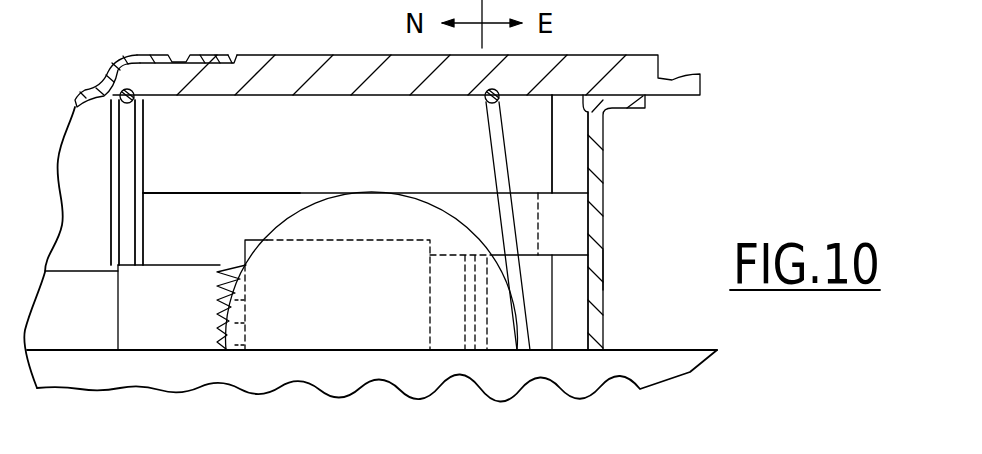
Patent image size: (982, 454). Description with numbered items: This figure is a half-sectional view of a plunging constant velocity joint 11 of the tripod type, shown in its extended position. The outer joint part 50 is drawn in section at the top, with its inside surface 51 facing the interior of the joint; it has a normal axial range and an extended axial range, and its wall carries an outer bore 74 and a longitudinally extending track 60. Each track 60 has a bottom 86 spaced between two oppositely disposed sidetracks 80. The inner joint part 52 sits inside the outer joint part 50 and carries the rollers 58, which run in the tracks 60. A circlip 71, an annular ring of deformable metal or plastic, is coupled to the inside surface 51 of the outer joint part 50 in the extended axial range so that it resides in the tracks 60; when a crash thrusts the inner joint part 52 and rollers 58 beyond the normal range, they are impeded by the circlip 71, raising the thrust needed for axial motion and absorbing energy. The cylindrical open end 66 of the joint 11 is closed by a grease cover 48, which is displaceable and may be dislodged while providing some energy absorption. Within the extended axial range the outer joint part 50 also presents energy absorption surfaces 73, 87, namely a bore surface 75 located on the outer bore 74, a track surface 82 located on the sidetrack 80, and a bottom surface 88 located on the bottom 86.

The constant velocity joint 11 is at (88, 418).
The outer joint part 50 is at (290, 66).
The outer bore 74 is at (327, 122).
The inside surface 51 is at (368, 97).
The cylindrical open end 66 is at (586, 93).
The energy absorption surface 73 is at (619, 145).
The bore surface 75 is at (573, 160).
The grease cover 48 is at (593, 203).
The track surface 82 is at (568, 240).
The energy absorption surface 87 is at (618, 267).
The bottom surface 88 is at (568, 320).
The circlip 71 is at (497, 165).
The roller 58 is at (367, 208).
The inner joint part 52 is at (367, 313).
The bottom 86 is at (228, 220).
The sidetrack 80 is at (260, 193).
The longitudinally extending track 60 is at (168, 223).